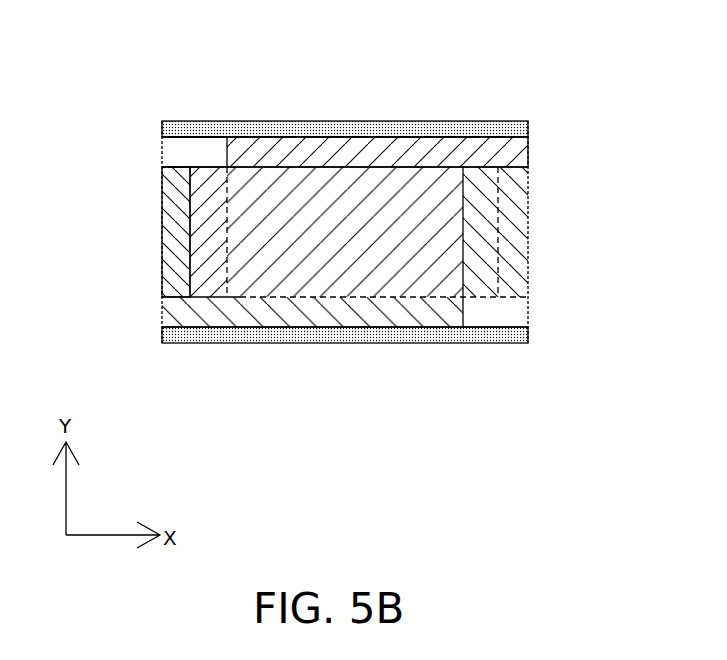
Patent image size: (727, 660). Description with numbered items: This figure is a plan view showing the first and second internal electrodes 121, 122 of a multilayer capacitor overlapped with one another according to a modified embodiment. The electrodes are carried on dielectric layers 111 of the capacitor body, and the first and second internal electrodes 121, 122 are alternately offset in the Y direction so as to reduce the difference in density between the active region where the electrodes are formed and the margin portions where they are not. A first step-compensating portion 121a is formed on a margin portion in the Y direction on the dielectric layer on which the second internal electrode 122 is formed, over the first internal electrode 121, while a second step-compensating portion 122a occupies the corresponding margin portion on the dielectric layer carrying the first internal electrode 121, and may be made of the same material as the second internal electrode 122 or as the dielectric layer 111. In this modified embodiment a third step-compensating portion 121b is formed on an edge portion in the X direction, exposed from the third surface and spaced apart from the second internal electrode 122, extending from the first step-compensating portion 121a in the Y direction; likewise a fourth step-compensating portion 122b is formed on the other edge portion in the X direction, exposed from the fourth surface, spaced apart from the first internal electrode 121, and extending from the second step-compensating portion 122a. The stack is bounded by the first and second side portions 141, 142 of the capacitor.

The dielectric layer 111 is at (512, 312).
The first internal electrode 121 is at (193, 230).
The first step-compensating portion 121a is at (313, 310).
The third step-compensating portion 121b is at (175, 201).
The second internal electrode 122 is at (490, 240).
The second step-compensating portion 122a is at (318, 142).
The fourth step-compensating portion 122b is at (512, 193).
The first side portion 141 is at (461, 338).
The second side portion 142 is at (450, 132).